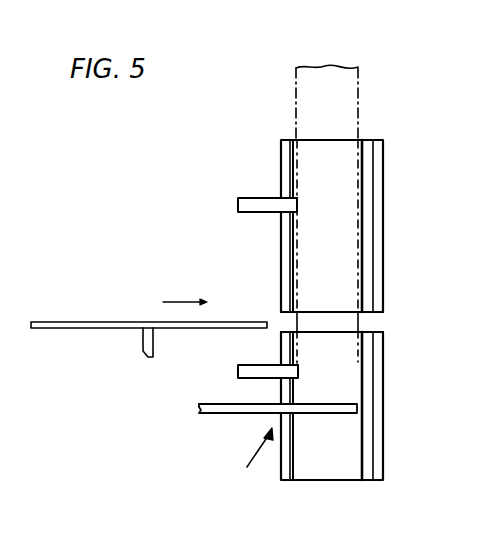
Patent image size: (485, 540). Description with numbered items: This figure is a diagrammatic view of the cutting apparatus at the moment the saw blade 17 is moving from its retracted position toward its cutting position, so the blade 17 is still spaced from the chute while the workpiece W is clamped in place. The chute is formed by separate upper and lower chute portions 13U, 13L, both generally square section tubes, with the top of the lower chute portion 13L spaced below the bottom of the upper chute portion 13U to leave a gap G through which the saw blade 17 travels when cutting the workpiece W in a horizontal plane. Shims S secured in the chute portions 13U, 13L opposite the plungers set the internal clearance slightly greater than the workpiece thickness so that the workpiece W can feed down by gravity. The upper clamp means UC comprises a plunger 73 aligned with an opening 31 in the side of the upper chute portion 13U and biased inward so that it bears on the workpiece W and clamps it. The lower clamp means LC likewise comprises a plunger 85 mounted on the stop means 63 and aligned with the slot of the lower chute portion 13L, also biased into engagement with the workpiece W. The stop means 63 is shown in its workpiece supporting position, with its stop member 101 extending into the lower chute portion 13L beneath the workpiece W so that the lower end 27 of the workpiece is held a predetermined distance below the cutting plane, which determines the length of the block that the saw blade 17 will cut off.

The workpiece W is at (318, 85).
The upper chute portion 13U is at (385, 222).
The lower chute portion 13L is at (385, 380).
The shims S is at (368, 180).
The gap G is at (372, 323).
The plunger 73 is at (238, 205).
The upper clamp means UC is at (255, 198).
The opening 31 is at (282, 216).
The circular saw blade 17 is at (108, 322).
The plunger 85 is at (238, 372).
The lower clamp means LC is at (262, 365).
The lower end 27 is at (357, 404).
The stop member 101 is at (229, 408).
The stop means 63 is at (240, 457).